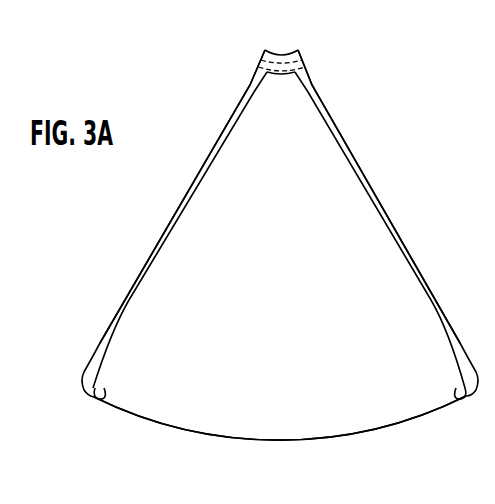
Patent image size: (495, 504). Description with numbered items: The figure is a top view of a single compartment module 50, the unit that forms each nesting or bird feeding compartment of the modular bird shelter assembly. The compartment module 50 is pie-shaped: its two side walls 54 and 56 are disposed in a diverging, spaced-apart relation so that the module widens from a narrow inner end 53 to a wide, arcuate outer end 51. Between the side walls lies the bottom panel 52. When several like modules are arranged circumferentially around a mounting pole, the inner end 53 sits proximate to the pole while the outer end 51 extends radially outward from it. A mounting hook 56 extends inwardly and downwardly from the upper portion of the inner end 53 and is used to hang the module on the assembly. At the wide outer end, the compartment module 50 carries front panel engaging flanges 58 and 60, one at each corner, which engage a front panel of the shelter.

The compartment module 50 is at (407, 177).
The outer end 51 is at (261, 438).
The bottom panel 52 is at (307, 365).
The inner end 53 is at (251, 81).
The side wall 54 is at (434, 294).
The side wall / mounting hook 56 is at (157, 247).
The front panel engaging flange 58 is at (462, 396).
The front panel engaging flange 60 is at (100, 394).